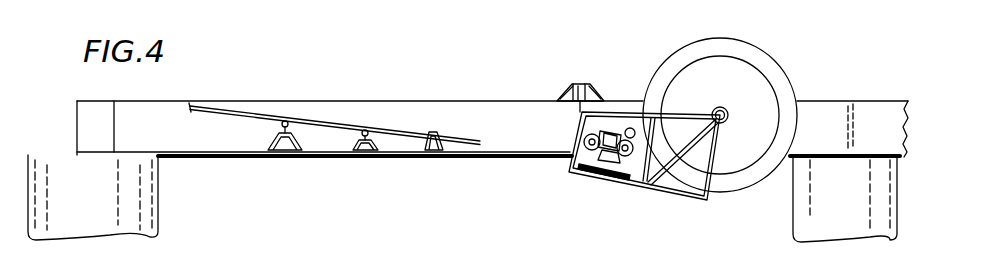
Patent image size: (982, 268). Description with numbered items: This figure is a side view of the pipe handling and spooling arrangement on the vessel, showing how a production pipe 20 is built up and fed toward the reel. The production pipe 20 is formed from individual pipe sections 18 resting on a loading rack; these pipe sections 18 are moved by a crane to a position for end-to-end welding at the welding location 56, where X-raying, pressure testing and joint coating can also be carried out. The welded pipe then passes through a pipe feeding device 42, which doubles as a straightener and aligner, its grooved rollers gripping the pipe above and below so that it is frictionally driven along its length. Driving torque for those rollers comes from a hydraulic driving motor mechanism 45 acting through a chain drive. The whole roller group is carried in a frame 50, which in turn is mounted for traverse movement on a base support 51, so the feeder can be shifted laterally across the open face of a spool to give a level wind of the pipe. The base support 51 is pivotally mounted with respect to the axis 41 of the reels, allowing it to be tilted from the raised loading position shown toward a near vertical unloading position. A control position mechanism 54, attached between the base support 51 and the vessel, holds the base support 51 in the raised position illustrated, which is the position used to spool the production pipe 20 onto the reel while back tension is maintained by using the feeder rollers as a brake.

The pipe sections 18 is at (330, 123).
The production pipe 20 is at (543, 147).
The welding location 56 is at (460, 137).
The control position mechanism 54 is at (587, 82).
The pipe feeding device 42 is at (588, 183).
The base support 51 is at (695, 194).
The axis of the reels 41 is at (725, 111).
The hydraulic driving motor mechanism 45 is at (630, 128).
The frame 50 is at (620, 178).